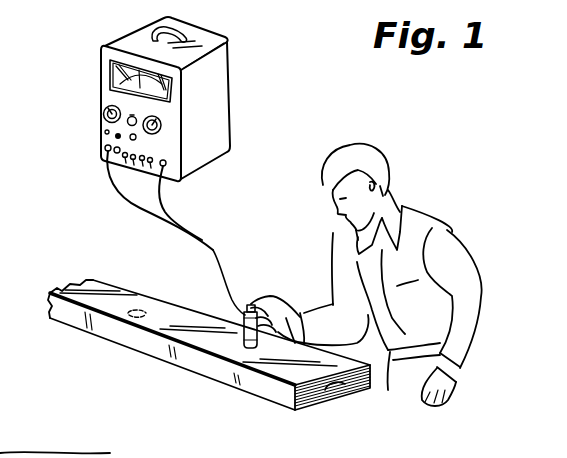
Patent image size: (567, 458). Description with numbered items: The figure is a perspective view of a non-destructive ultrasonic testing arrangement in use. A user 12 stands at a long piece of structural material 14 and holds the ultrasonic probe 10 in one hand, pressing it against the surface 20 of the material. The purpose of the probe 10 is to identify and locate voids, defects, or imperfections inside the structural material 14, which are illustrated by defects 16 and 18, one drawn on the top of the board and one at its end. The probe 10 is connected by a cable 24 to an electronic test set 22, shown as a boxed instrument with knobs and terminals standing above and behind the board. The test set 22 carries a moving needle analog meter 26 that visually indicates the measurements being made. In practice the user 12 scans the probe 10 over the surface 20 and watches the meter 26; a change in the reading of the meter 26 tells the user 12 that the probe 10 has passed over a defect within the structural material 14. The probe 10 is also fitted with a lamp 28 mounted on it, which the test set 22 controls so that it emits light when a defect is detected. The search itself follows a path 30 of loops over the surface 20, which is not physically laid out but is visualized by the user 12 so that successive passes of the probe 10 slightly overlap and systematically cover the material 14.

The ultrasonic probe 10 is at (240, 327).
The user 12 is at (452, 232).
The structural material 14 is at (295, 411).
The defect 16 is at (135, 310).
The defect 18 is at (343, 386).
The surface 20 is at (181, 321).
The electronic test set 22 is at (223, 90).
The cable 24 is at (213, 252).
The moving needle analog meter 26 is at (112, 73).
The lamp 28 is at (254, 307).
The path 30 is at (60, 452).